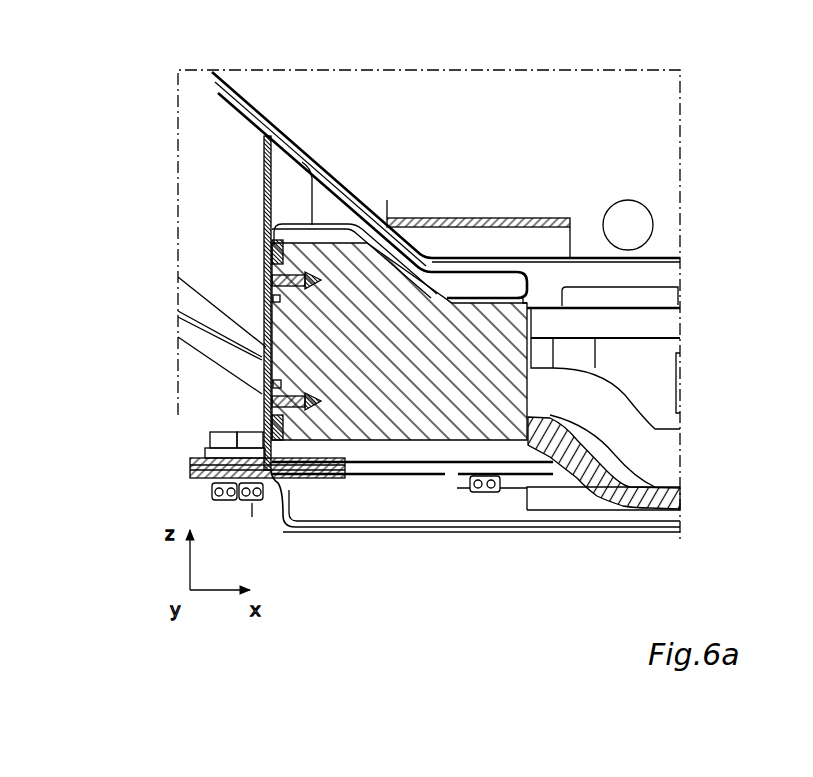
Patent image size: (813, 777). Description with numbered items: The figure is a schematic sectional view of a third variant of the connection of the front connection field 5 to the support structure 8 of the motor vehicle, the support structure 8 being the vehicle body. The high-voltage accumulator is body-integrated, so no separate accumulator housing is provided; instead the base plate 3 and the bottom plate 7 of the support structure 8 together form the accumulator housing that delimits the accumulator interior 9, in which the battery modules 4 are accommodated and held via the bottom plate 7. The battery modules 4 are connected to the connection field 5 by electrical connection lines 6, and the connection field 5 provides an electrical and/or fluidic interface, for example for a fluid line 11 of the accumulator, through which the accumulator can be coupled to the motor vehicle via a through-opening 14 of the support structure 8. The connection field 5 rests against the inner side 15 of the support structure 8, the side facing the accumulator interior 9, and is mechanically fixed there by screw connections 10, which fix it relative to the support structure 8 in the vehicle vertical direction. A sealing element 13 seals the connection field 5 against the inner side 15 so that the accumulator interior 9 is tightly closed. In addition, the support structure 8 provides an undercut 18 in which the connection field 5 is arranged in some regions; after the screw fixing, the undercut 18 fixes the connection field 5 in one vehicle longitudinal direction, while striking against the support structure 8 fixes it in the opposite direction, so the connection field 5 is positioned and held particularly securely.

The base plate 3 is at (577, 528).
The battery modules 4 is at (590, 258).
The connection field 5 is at (293, 347).
The electrical connection lines 6 is at (643, 328).
The bottom plate 7 is at (250, 500).
The support structure 8 is at (330, 225).
The accumulator interior 9 is at (633, 449).
The screw connections 10 is at (331, 289).
The fluid line 11 is at (527, 493).
The sealing element 13 is at (264, 256).
The through-opening 14 is at (230, 393).
The inner side 15 is at (310, 454).
The undercut 18 is at (362, 268).